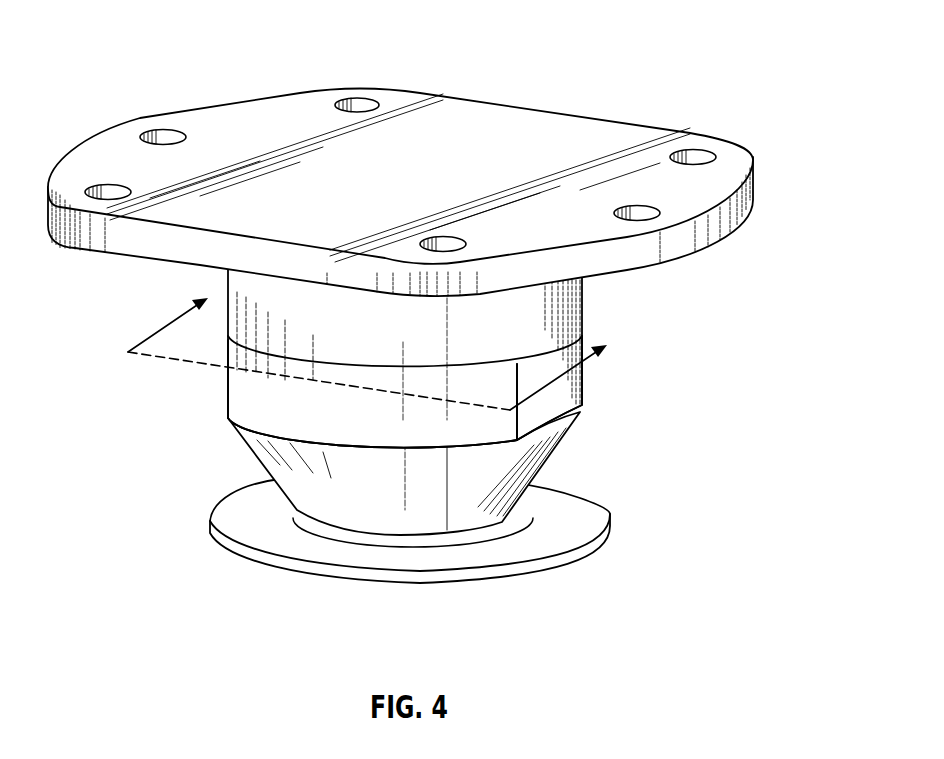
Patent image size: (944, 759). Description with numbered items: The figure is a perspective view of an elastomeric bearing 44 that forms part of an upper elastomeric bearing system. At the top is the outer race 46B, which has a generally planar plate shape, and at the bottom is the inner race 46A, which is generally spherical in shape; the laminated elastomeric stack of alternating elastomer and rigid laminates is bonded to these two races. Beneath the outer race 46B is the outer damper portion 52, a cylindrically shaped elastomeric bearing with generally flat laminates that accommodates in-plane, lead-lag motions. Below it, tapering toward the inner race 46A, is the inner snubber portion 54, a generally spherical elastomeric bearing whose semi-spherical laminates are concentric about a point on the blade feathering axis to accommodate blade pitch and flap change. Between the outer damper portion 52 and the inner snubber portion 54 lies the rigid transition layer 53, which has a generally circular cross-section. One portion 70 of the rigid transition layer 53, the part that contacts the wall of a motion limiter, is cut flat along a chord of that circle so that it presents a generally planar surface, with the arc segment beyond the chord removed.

The elastomeric bearing 44 is at (681, 40).
The outer race 46B is at (527, 132).
The inner race 46A is at (471, 574).
The outer damper portion 52 is at (567, 300).
The rigid transition layer 53 is at (247, 387).
The inner snubber portion 54 is at (545, 456).
The portion of the rigid transition layer 70 is at (593, 389).